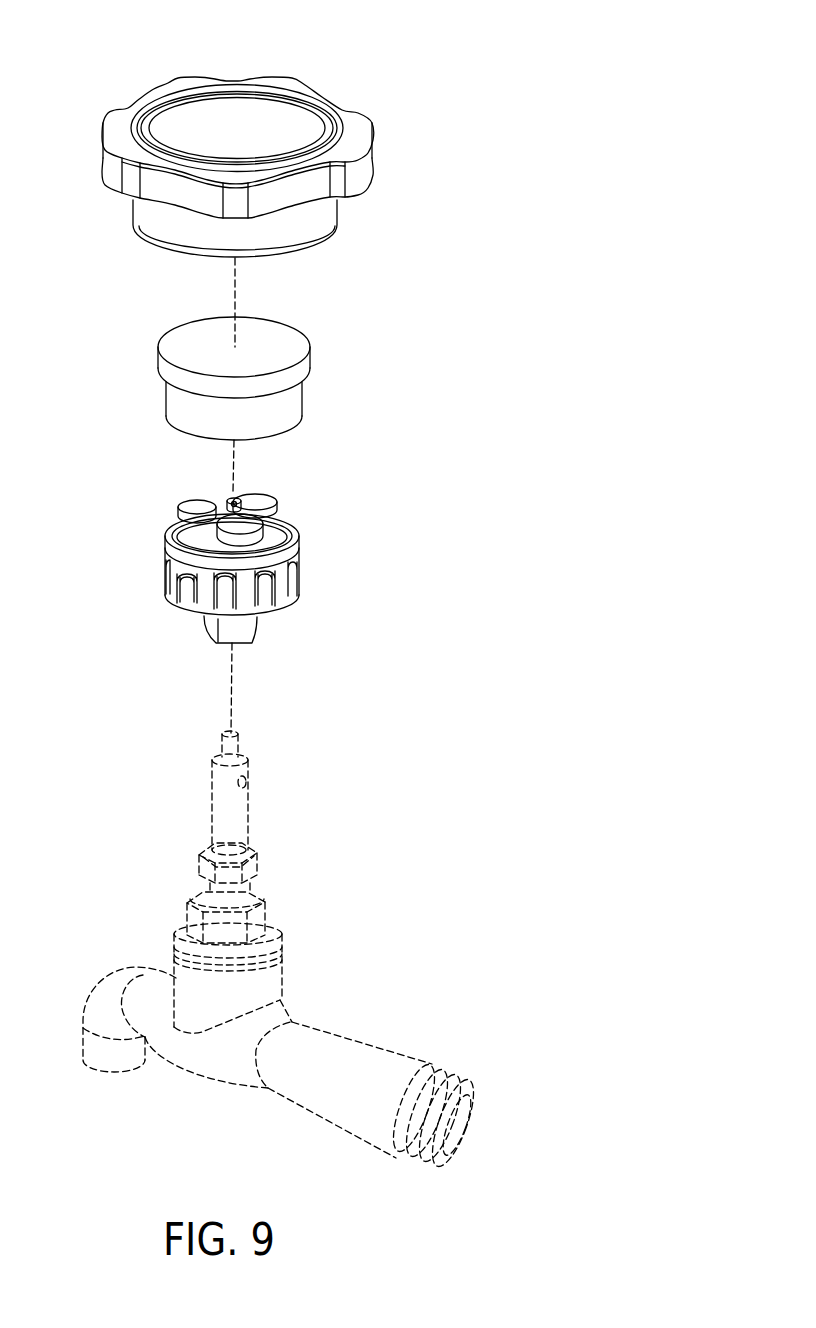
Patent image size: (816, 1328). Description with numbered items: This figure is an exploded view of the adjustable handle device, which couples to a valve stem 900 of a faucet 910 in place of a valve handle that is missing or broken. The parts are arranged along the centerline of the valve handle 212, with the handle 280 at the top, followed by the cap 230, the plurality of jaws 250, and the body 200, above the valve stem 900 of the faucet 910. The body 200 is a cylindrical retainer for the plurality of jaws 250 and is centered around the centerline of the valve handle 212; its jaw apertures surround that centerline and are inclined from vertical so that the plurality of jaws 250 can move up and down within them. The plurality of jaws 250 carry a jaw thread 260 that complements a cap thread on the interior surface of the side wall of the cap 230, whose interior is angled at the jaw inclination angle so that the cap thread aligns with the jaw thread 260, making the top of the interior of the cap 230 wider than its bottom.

The handle 280 is at (279, 112).
The cap 230 is at (310, 359).
The plurality of jaws 250 is at (263, 500).
The jaw thread 260 is at (170, 524).
The body 200 is at (303, 572).
The centerline of the valve handle 212 is at (231, 708).
The valve stem 900 is at (237, 832).
The faucet 910 is at (305, 1037).